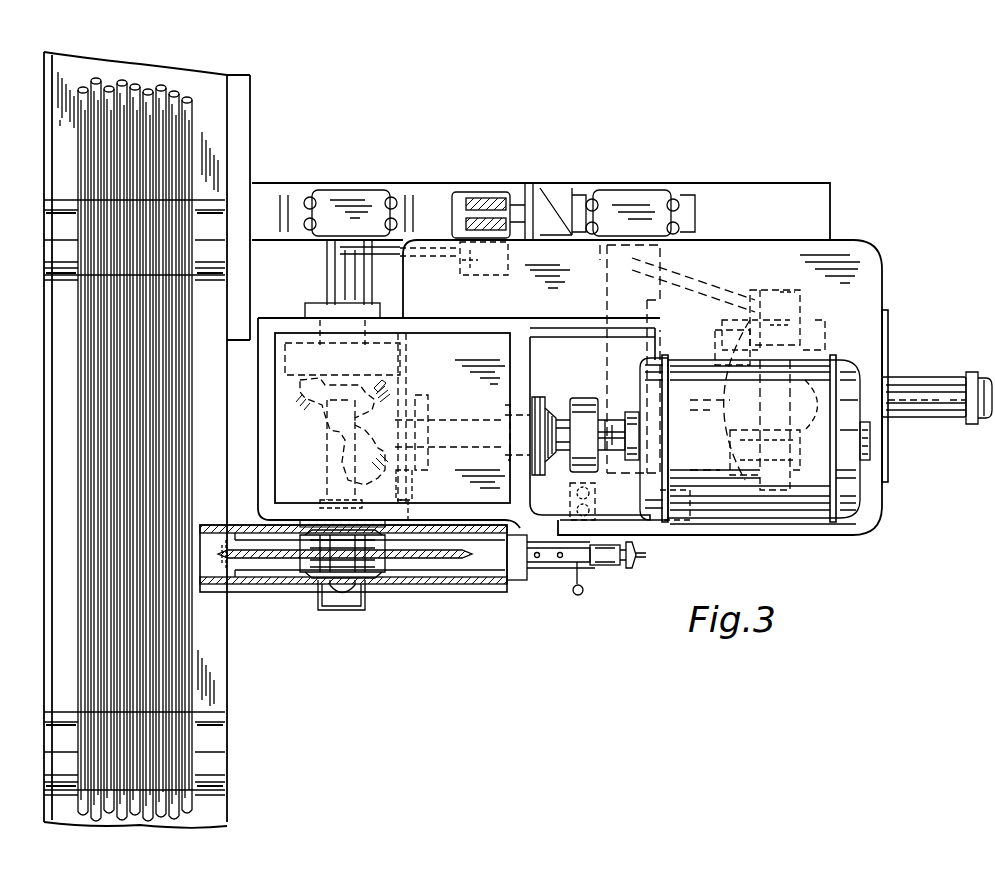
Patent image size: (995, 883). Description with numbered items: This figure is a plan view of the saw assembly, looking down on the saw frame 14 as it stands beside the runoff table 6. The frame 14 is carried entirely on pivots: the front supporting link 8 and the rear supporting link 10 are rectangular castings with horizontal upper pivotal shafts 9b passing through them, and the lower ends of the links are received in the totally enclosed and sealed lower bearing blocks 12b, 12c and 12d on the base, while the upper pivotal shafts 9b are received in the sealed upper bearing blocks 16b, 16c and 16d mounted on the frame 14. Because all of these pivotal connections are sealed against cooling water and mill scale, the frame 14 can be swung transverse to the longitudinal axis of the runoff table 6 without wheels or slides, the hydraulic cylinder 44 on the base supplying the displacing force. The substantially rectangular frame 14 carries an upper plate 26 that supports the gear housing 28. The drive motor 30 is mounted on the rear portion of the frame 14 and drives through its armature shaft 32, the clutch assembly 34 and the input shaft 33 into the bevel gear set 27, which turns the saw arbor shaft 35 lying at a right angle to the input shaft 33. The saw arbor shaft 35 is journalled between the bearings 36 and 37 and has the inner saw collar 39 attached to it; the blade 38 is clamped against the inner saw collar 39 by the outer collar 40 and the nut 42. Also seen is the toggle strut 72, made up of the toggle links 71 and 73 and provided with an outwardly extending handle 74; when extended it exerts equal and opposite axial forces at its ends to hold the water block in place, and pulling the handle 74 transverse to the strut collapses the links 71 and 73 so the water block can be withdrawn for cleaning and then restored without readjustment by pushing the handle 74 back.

The runoff table 6 is at (215, 641).
The front supporting link 8 is at (395, 258).
The upper pivotal shaft 9b is at (500, 275).
The rear supporting link 10 is at (720, 285).
The lower bearing block 12b is at (332, 188).
The lower bearing block 12c is at (665, 520).
The lower bearing block 12d is at (621, 195).
The saw frame 14 is at (883, 300).
The upper bearing block 16b is at (458, 192).
The upper bearing block 16c is at (818, 470).
The upper bearing block 16d is at (815, 325).
The upper plate 26 is at (745, 532).
The bevel gear set 27 is at (405, 395).
The gear housing 28 is at (487, 337).
The drive motor 30 is at (788, 520).
The armature shaft 32 is at (614, 425).
The input shaft 33 is at (425, 420).
The clutch assembly 34 is at (578, 400).
The saw arbor shaft 35 is at (325, 455).
The bearing 36 is at (368, 515).
The bearing 37 is at (335, 336).
The blade 38 is at (434, 562).
The inner saw collar 39 is at (312, 530).
The outer collar 40 is at (372, 568).
The nut 42 is at (338, 590).
The hydraulic cylinder 44 is at (932, 383).
The toggle link 71 is at (545, 563).
The toggle strut 72 is at (612, 566).
The toggle link 73 is at (598, 565).
The handle 74 is at (574, 597).